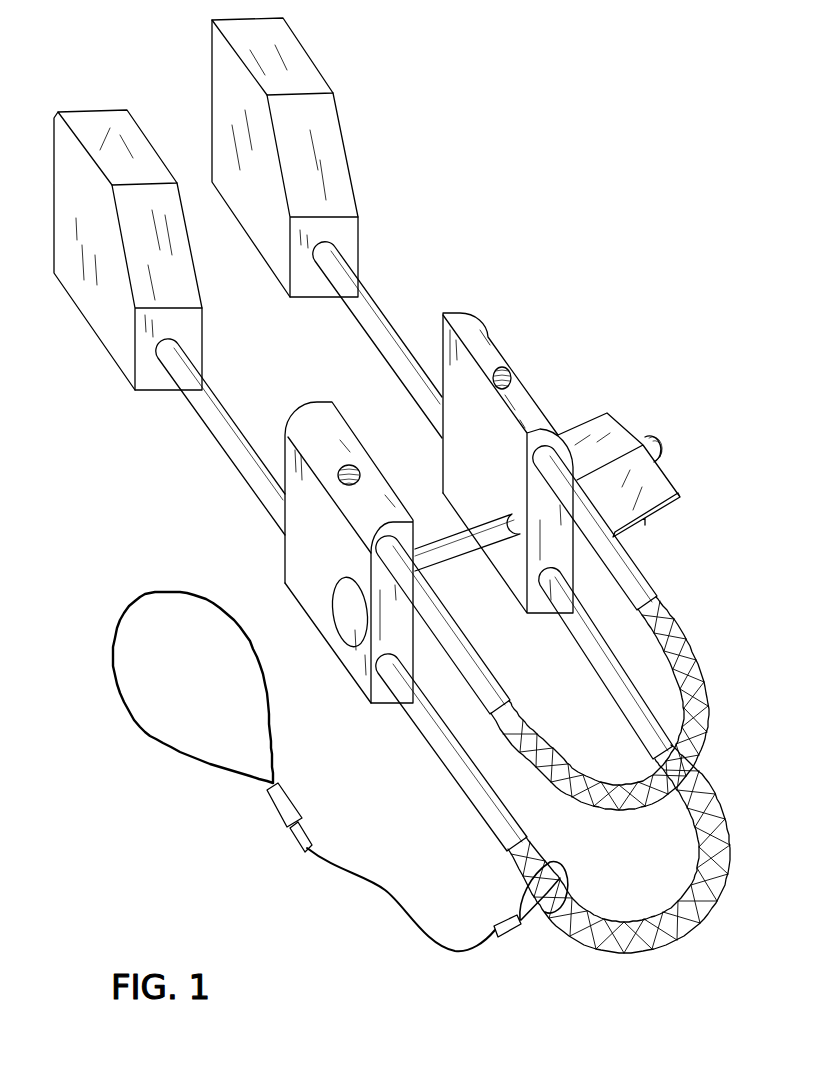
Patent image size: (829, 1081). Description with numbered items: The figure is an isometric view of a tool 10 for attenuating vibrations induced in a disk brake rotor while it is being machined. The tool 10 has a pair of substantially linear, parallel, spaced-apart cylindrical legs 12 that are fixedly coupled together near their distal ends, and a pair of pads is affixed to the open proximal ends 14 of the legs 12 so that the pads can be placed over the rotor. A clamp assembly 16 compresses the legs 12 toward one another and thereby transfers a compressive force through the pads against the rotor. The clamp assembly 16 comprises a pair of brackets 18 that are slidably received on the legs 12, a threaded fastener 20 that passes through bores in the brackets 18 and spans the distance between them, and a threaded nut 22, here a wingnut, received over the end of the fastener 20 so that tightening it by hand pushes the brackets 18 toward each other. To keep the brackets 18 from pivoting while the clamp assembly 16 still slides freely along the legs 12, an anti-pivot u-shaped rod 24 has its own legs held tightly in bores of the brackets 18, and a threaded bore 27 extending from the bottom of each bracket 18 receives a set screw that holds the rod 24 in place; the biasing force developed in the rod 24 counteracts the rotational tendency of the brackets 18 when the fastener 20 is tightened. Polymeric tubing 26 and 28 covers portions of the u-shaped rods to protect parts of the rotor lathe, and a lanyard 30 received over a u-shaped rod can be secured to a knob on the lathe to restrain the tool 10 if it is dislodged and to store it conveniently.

The tool 10 is at (588, 145).
The legs 12 is at (622, 680).
The open proximal ends 14 is at (293, 48).
The clamp assembly 16 is at (590, 382).
The brackets 18 is at (303, 570).
The threaded fastener 20 is at (455, 543).
The threaded nut 22 is at (657, 480).
The anti-pivot u-shaped rod 24 is at (653, 595).
The polymeric tubing 26 is at (723, 833).
The threaded bore 27 is at (343, 463).
The polymeric tubing 28 is at (707, 717).
The lanyard 30 is at (378, 887).